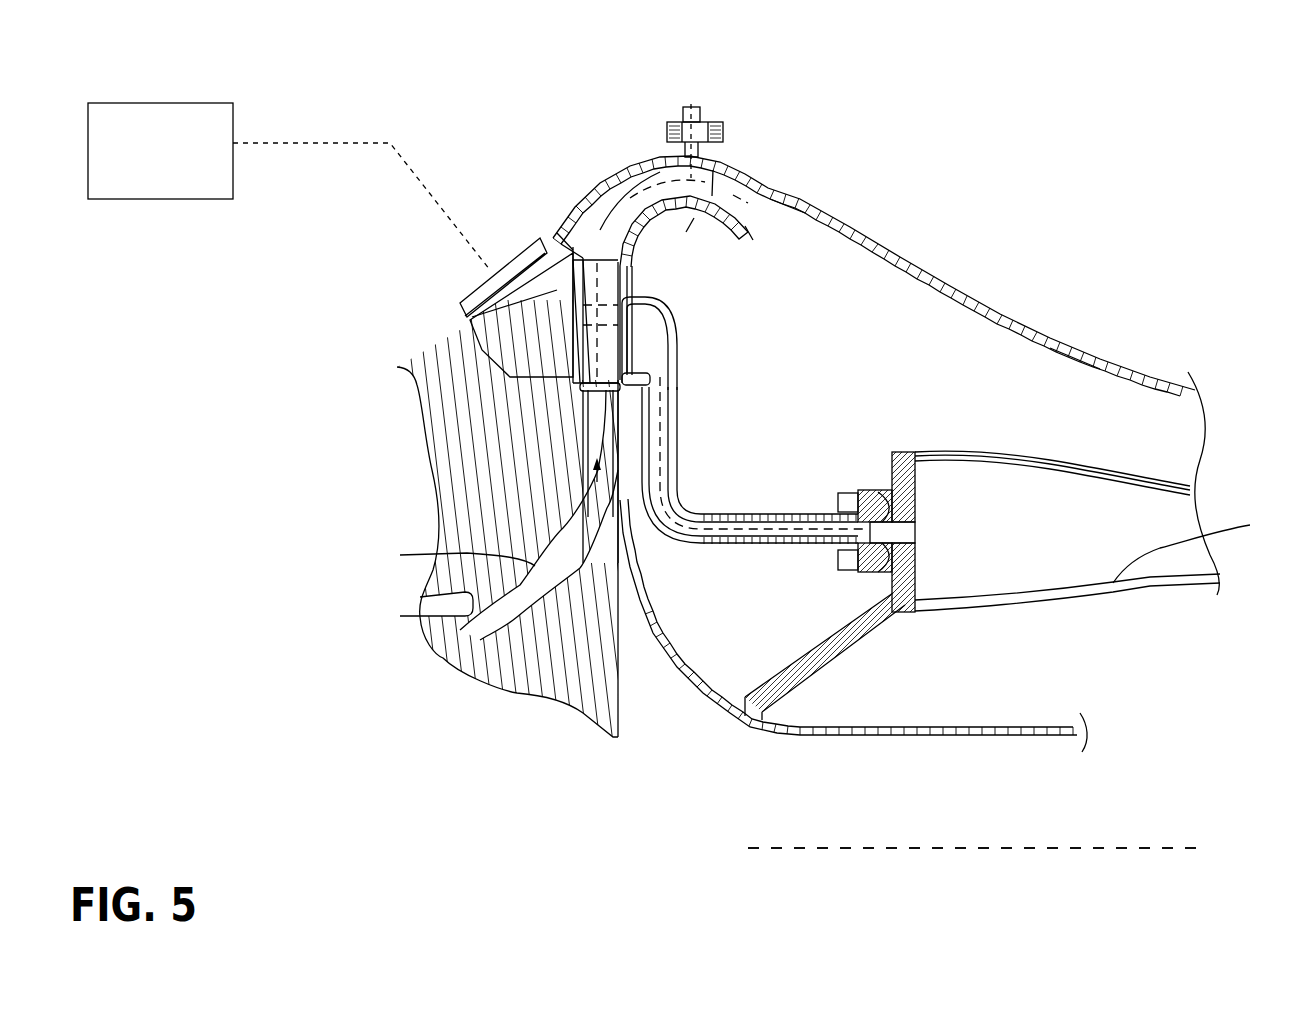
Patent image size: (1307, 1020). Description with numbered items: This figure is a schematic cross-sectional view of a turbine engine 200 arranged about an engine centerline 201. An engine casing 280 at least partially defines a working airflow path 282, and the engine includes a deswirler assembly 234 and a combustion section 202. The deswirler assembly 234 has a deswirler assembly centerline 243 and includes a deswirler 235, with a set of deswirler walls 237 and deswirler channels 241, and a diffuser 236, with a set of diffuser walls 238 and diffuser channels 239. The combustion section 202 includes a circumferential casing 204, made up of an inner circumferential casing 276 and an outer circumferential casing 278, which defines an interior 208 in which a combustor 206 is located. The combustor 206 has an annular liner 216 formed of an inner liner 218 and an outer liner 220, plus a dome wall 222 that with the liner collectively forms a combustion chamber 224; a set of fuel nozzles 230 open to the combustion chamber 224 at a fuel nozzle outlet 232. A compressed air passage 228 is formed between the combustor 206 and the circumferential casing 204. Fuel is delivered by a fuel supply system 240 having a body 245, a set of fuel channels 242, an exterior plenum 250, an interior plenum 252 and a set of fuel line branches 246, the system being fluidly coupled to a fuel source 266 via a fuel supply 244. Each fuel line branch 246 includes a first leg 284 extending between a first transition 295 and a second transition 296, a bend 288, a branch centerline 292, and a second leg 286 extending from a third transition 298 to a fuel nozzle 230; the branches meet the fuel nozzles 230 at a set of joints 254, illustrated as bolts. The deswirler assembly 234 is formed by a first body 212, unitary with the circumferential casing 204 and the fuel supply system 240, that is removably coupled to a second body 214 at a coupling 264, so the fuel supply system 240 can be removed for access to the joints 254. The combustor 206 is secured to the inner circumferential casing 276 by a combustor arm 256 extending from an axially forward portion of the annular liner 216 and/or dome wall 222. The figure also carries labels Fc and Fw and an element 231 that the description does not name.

The turbine engine 200 is at (826, 26).
The engine centerline 201 is at (1005, 853).
The combustion section 202 is at (1030, 330).
The circumferential casing 204 is at (1127, 368).
The combustor 206 is at (1150, 467).
The interior 208 is at (978, 361).
The first body 212 is at (796, 207).
The second body 214 is at (477, 322).
The annular liner 216 is at (1202, 546).
The inner liner 218 is at (1010, 604).
The outer liner 220 is at (983, 451).
The dome wall 222 is at (893, 451).
The combustion chamber 224 is at (1060, 522).
The compressed air passage 228 is at (884, 318).
The set of fuel nozzles 230 is at (880, 492).
The washer 231 is at (890, 552).
The fuel nozzle outlet 232 is at (918, 540).
The deswirler assembly 234 is at (606, 180).
The deswirler 235 is at (717, 188).
The diffuser 236 is at (607, 220).
The set of deswirler walls 237 is at (600, 257).
The set of diffuser walls 238 is at (393, 440).
The set of diffuser channels 239 is at (612, 294).
The fuel supply system 240 is at (648, 513).
The set of deswirler channels 241 is at (653, 170).
The set of fuel channels 242 is at (575, 275).
The deswirler assembly centerline 243 is at (689, 214).
The fuel supply 244 is at (417, 177).
The body 245 is at (788, 517).
The set of fuel line branches 246 is at (688, 502).
The exterior plenum 250 is at (575, 345).
The interior plenum 252 is at (667, 320).
The set of joints 254 is at (849, 492).
The combustor arm 256 is at (810, 670).
The coupling 264 is at (731, 130).
The fuel source 266 is at (188, 200).
The inner circumferential casing 276 is at (1043, 740).
The outer circumferential casing 278 is at (1085, 365).
The engine casing 280 is at (433, 572).
The working airflow path 282 is at (400, 616).
The first leg 284 is at (640, 430).
The second leg 286 is at (823, 547).
The bend 288 is at (660, 552).
The branch centerline 292 is at (680, 404).
The first transition 295 is at (683, 356).
The second transition 296 is at (640, 503).
The third transition 298 is at (710, 546).
The cooling flow Fc is at (797, 242).
The working flow Fw is at (400, 555).